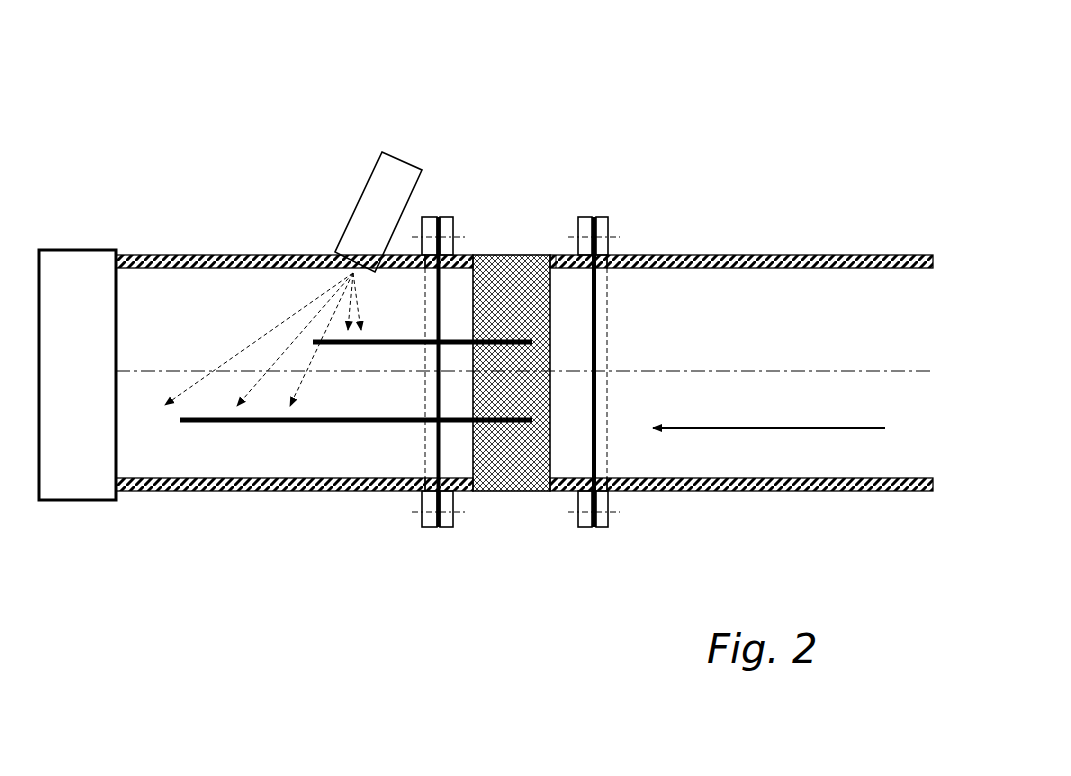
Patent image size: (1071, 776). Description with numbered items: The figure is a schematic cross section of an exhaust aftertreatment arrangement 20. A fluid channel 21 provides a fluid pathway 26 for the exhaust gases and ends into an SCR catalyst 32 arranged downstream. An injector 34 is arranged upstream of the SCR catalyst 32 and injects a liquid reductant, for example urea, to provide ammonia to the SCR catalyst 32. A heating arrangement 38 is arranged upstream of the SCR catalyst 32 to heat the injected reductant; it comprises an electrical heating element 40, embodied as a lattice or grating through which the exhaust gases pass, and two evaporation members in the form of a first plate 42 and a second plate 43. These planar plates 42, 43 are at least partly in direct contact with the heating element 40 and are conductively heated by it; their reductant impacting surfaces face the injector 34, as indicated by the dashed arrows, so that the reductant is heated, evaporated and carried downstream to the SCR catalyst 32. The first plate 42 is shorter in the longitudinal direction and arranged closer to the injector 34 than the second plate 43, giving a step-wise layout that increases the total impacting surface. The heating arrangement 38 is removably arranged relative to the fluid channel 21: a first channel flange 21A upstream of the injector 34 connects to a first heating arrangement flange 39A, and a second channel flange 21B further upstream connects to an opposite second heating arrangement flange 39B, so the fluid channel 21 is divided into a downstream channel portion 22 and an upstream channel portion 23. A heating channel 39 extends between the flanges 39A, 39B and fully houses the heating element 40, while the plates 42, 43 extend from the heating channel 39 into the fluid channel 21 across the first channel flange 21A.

The exhaust aftertreatment arrangement 20 is at (724, 104).
The fluid channel 21 is at (812, 250).
The first channel flange 21A is at (421, 527).
The second channel flange 21B is at (600, 527).
The first channel portion 22 is at (191, 491).
The second channel portion 23 is at (893, 491).
The fluid pathway 26 is at (731, 296).
The SCR catalyst 32 is at (74, 250).
The injector 34 is at (389, 152).
The heating arrangement 38 is at (523, 604).
The heating channel 39 is at (559, 255).
The first heating arrangement flange 39A is at (440, 217).
The second heating arrangement flange 39B is at (580, 217).
The electrical heating element 40 is at (505, 491).
The first plate 42 is at (357, 345).
The second plate 43 is at (267, 422).